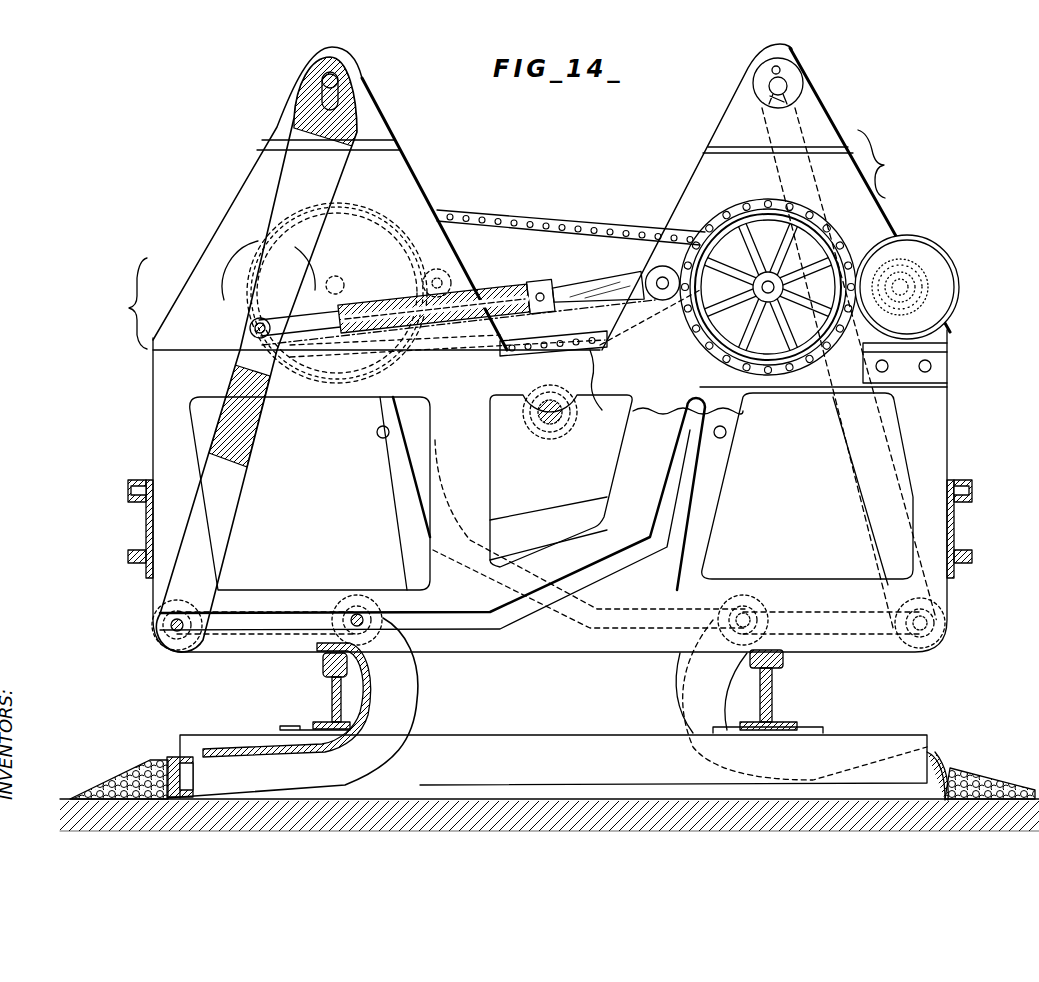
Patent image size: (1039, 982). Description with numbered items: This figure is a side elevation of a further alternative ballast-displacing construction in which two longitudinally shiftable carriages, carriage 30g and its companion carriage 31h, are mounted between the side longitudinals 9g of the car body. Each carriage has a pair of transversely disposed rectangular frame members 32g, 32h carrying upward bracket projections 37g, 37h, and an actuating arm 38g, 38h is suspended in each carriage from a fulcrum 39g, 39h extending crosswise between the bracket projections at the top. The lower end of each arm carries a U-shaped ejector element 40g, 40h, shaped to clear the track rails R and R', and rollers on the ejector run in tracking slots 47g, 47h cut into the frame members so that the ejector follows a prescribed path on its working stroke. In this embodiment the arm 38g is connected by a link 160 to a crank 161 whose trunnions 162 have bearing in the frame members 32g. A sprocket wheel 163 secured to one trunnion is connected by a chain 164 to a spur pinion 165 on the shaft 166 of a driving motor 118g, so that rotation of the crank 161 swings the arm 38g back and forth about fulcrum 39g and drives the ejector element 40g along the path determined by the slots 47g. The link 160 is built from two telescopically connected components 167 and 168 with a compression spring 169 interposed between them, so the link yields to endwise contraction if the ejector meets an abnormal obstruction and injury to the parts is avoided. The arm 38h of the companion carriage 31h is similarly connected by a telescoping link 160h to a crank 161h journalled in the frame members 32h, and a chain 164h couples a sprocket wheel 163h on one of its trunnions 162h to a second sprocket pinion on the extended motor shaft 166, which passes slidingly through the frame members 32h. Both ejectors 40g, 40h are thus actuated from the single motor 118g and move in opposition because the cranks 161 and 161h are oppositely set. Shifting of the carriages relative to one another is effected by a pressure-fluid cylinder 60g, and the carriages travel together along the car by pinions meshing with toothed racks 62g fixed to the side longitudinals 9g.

The fulcrum 39g is at (335, 82).
The pivot pin 39h is at (782, 84).
The triangular side plate 37g is at (247, 182).
The triangular side plate 37h is at (703, 165).
The companion carriage 31h is at (896, 164).
The carriage 30g is at (126, 303).
The actuating arm 38g is at (207, 488).
The actuating arm 38h is at (865, 478).
The frame members 32g is at (160, 388).
The frame members 32h is at (410, 498).
The trunnions 162 is at (762, 273).
The trunnions 162h is at (340, 280).
The sprocket wheel 163 is at (743, 348).
The sprocket wheel 163h is at (395, 224).
The chain 164 is at (835, 239).
The chain 164h is at (567, 223).
The crank 161 is at (675, 276).
The crank 161h is at (430, 268).
The link 160 is at (590, 268).
The telescoping link 160h is at (499, 270).
The spur pinion 165 is at (900, 234).
The motor shaft 166 is at (948, 258).
The driving motor 118g is at (955, 276).
The telescopically-connected component 168 is at (508, 320).
The telescopically-connected component 167 is at (312, 346).
The compression spring 169 is at (412, 345).
The bearing notch 60g is at (535, 428).
The side bracket lug 62g is at (140, 478).
The side plate 9g is at (146, 528).
The tracking slots 47g is at (470, 604).
The link arm 47h is at (682, 604).
The track rail R is at (313, 691).
The track rail R' is at (768, 691).
The ejector element 40g is at (430, 660).
The ejector element 40h is at (676, 660).